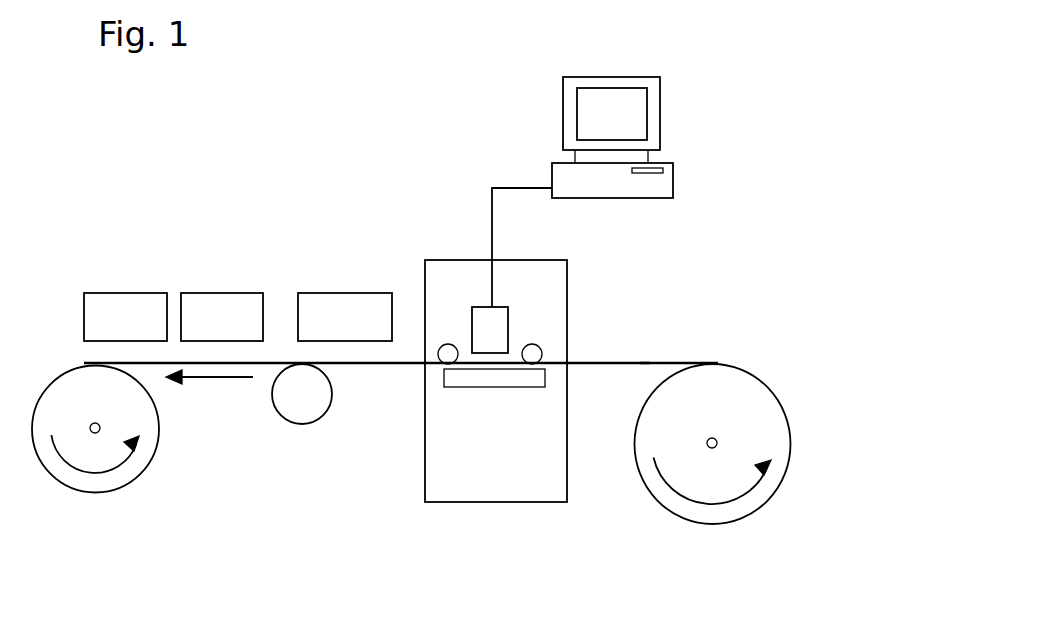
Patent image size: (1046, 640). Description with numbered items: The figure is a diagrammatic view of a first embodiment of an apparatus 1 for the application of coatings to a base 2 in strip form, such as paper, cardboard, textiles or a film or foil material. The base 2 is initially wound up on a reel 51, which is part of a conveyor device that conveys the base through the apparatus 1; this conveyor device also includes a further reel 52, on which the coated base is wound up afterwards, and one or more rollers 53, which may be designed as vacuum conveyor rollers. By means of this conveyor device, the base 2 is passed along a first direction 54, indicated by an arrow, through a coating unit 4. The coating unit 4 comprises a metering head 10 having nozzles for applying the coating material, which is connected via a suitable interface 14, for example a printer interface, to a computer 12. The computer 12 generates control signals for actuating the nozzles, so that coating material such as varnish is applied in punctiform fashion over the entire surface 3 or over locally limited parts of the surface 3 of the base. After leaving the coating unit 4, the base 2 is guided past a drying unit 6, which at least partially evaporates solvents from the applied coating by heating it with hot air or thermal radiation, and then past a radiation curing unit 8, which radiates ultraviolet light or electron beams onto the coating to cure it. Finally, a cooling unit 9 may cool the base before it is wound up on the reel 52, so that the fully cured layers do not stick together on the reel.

The apparatus 1 is at (391, 120).
The base 2 is at (613, 362).
The surface 3 is at (652, 362).
The coating unit 4 is at (503, 503).
The drying unit 6 is at (325, 293).
The radiation curing unit 8 is at (218, 293).
The cooling unit 9 is at (123, 293).
The metering head 10 is at (470, 320).
The computer 12 is at (673, 167).
The interface 14 is at (518, 187).
The reel 51 is at (685, 520).
The further reel 52 is at (80, 492).
The rollers 53 is at (297, 423).
The first direction 54 is at (213, 378).